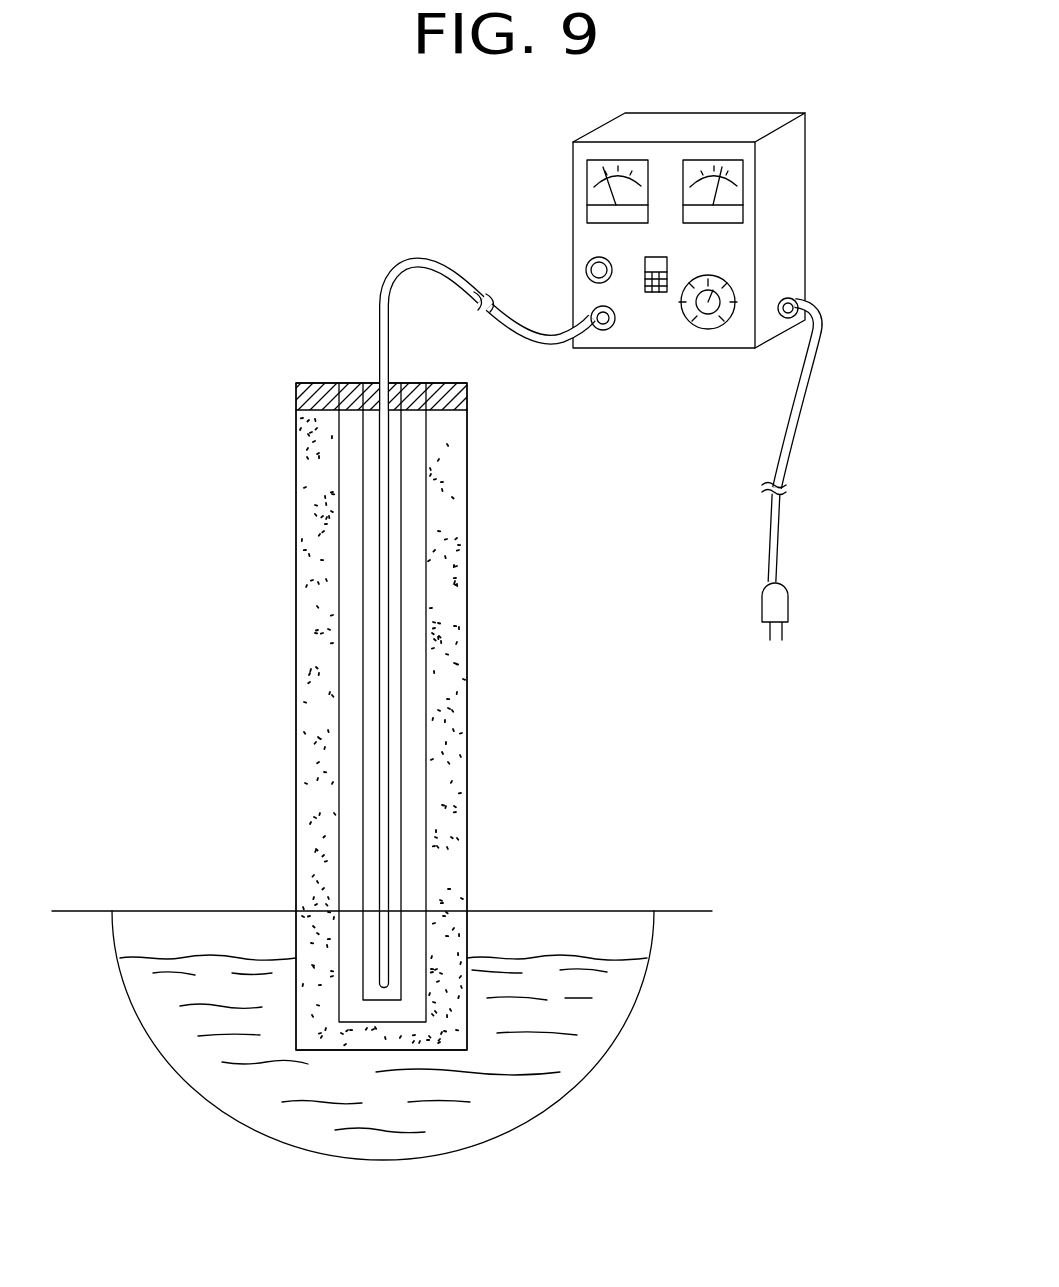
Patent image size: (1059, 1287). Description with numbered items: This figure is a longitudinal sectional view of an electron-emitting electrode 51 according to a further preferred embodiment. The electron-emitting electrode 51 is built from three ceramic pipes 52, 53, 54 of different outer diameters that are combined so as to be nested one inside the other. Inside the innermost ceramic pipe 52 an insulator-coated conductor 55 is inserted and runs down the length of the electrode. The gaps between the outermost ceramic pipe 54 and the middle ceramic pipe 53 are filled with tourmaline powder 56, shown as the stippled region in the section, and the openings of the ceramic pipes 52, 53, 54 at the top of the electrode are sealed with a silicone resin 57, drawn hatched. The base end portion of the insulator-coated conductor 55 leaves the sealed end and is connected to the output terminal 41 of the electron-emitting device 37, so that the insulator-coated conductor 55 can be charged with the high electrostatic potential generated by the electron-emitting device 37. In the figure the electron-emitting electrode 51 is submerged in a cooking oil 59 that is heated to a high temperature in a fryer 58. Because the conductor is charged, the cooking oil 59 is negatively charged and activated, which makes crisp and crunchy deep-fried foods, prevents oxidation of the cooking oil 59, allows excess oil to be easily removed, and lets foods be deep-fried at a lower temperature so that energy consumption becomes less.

The electron-emitting device 37 is at (667, 349).
The output terminal 41 is at (610, 331).
The electron-emitting electrode 51 is at (284, 557).
The ceramic pipe 52 is at (403, 523).
The ceramic pipe 53 is at (428, 723).
The ceramic pipe 54 is at (467, 820).
The insulator-coated conductor 55 is at (405, 614).
The tourmaline powder 56 is at (316, 653).
The silicone resin 57 is at (320, 383).
The fryer 58 is at (610, 1043).
The cooking oil 59 is at (212, 978).